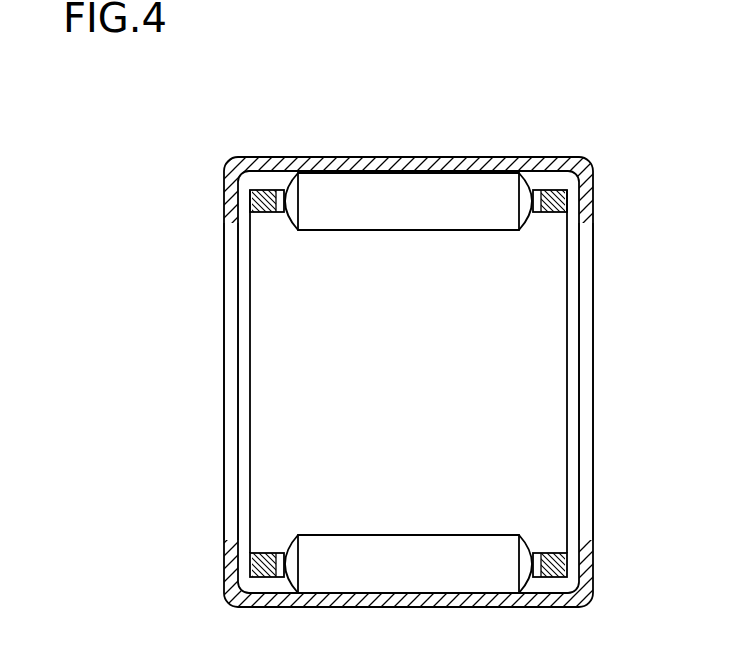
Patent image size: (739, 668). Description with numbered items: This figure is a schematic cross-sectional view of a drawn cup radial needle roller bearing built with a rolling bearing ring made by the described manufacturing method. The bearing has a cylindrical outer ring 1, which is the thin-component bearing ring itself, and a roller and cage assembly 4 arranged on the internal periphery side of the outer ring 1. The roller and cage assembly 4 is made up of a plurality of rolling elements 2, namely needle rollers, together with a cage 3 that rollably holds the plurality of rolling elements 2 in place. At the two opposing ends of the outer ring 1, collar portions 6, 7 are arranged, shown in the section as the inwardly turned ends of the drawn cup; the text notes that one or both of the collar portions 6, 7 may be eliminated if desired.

The outer ring 1 is at (304, 157).
The rolling element 2 is at (489, 190).
The cage 3 is at (470, 104).
The roller and cage assembly 4 is at (410, 328).
The collar portion 6 is at (224, 201).
The collar portion 7 is at (593, 193).